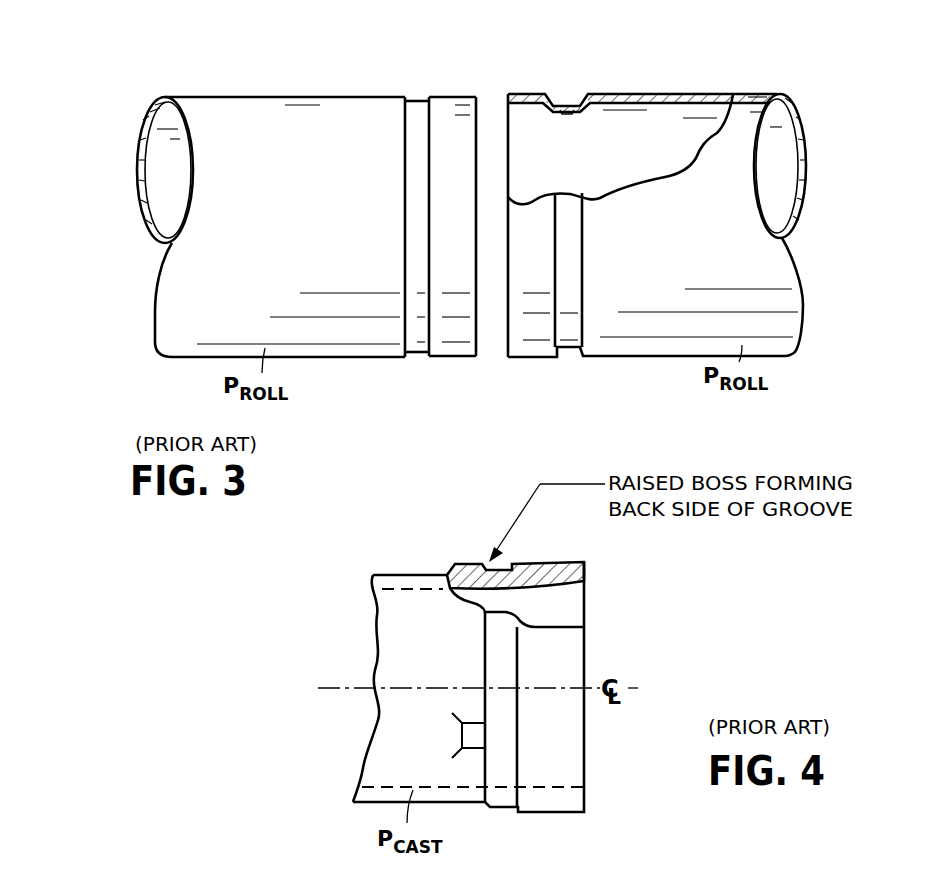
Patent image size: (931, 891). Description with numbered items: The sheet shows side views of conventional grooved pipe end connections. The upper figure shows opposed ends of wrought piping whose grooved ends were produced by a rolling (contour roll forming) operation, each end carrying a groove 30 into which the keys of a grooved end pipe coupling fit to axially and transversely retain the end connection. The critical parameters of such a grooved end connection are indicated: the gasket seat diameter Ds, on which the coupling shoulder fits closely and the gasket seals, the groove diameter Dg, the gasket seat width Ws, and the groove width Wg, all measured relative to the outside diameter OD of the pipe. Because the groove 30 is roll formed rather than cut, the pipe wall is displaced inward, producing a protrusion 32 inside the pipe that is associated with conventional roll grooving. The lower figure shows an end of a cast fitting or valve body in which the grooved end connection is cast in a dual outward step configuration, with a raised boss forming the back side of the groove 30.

In FIG. 3, the groove 30 is at (418, 357).
In FIG. 4, the groove 30 is at (505, 565).
In FIG. 3, the protrusion 32 is at (584, 108).
In FIG. 3, the outside diameter OD is at (145, 358).
In FIG. 3, the gasket seat diameter Ds is at (500, 97).
In FIG. 3, the groove diameter Dg is at (569, 108).
In FIG. 3, the gasket seat width Ws is at (553, 87).
In FIG. 3, the groove width Wg is at (522, 53).